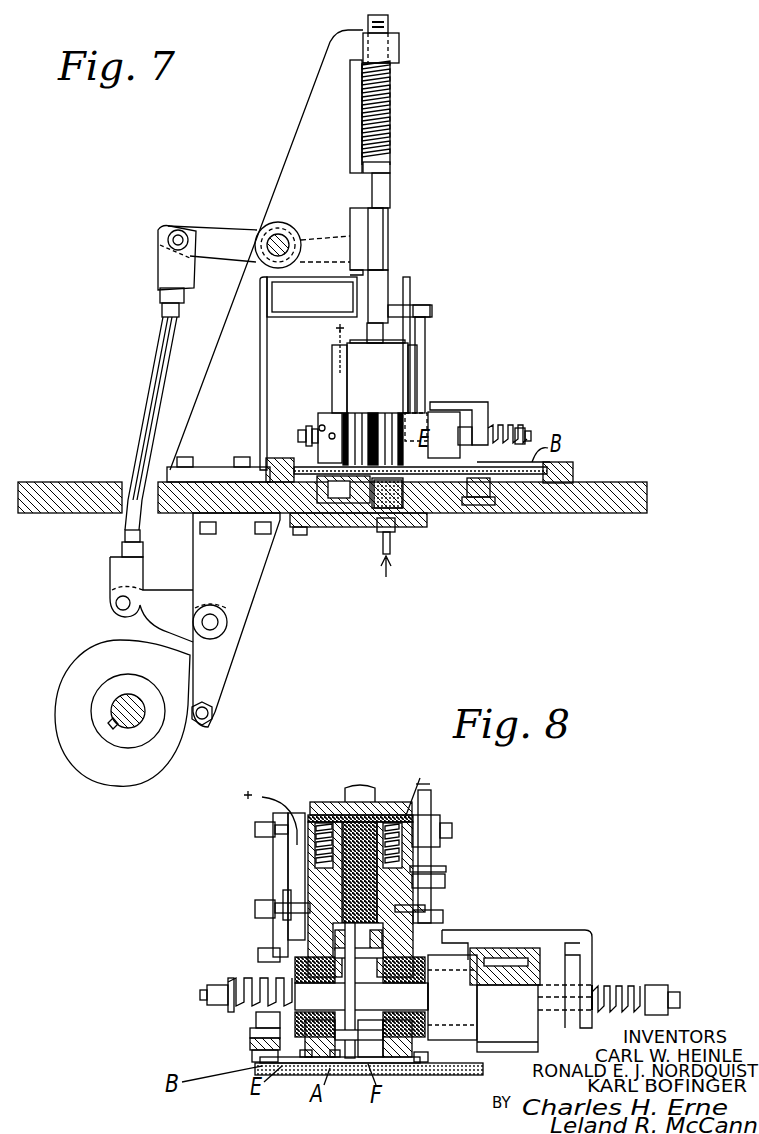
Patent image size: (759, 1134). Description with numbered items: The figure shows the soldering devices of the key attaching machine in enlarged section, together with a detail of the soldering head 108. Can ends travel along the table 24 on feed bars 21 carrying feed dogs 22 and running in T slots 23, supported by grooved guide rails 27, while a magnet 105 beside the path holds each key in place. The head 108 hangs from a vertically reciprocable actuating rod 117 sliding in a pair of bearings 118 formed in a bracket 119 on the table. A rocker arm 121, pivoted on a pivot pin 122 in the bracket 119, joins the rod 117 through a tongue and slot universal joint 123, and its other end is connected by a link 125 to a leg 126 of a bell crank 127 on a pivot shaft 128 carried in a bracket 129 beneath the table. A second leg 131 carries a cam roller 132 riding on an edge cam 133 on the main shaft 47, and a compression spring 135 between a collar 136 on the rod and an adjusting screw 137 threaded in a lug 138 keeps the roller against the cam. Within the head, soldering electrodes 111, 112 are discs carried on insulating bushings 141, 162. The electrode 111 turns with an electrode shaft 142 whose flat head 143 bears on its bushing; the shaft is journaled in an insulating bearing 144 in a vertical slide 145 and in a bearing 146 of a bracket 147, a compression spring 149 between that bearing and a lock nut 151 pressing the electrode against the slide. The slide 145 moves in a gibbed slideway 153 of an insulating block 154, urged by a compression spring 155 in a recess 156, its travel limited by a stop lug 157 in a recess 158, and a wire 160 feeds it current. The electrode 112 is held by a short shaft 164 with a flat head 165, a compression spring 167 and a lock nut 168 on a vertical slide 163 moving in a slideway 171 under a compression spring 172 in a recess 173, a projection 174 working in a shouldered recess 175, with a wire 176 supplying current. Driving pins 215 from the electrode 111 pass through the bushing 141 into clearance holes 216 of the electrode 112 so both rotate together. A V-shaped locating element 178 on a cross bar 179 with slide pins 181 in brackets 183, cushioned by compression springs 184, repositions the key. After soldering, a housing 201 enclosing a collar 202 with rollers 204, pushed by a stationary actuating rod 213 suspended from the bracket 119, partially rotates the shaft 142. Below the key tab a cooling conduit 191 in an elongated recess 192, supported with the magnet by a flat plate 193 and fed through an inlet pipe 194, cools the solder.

In FIG. 7, the adjusting screw 137 is at (392, 24).
In FIG. 7, the lug 138 is at (399, 52).
In FIG. 7, the compression spring 135 is at (391, 100).
In FIG. 7, the collar 136 is at (390, 168).
In FIG. 7, the bearings 118 is at (383, 192).
In FIG. 7, the actuating rod 117 is at (380, 228).
In FIG. 8, the actuating rod 117 is at (355, 790).
In FIG. 7, the tongue and slot universal joint 123 is at (383, 252).
In FIG. 7, the wire 160 is at (410, 283).
In FIG. 8, the wire 160 is at (430, 795).
In FIG. 7, the bracket 119 is at (312, 116).
In FIG. 7, the stationary actuating rod 213 is at (425, 345).
In FIG. 7, the rocker arm 121 is at (220, 237).
In FIG. 7, the pivot pin 122 is at (281, 242).
In FIG. 7, the link 125 is at (152, 362).
In FIG. 7, the wire 176 is at (338, 341).
In FIG. 8, the wire 176 is at (262, 798).
In FIG. 7, the soldering head 108 is at (391, 378).
In FIG. 8, the soldering head 108 is at (372, 812).
In FIG. 7, the soldering electrode 112 is at (338, 420).
In FIG. 8, the soldering electrode 112 is at (345, 1060).
In FIG. 7, the compression spring 167 is at (318, 445).
In FIG. 8, the compression spring 167 is at (246, 982).
In FIG. 7, the short shaft 164 is at (298, 434).
In FIG. 8, the short shaft 164 is at (207, 996).
In FIG. 7, the grooved guide rails 27 is at (270, 462).
In FIG. 7, the feed dogs 22 is at (303, 465).
In FIG. 7, the insulating bearing 144 is at (395, 408).
In FIG. 8, the insulating bearing 144 is at (415, 1047).
In FIG. 7, the soldering electrode 111 is at (418, 425).
In FIG. 8, the soldering electrode 111 is at (390, 1058).
In FIG. 7, the bracket 147 is at (470, 400).
In FIG. 8, the bracket 147 is at (575, 937).
In FIG. 7, the bearing 146 is at (476, 430).
In FIG. 8, the bearing 146 is at (585, 985).
In FIG. 7, the housing 201 is at (445, 446).
In FIG. 8, the housing 201 is at (520, 1045).
In FIG. 7, the compression spring 149 is at (512, 428).
In FIG. 8, the compression spring 149 is at (622, 988).
In FIG. 7, the electrode shaft 142 is at (531, 436).
In FIG. 8, the electrode shaft 142 is at (692, 998).
In FIG. 7, the feed bars 21 is at (488, 500).
In FIG. 7, the T slots 23 is at (480, 505).
In FIG. 7, the elongated recess 192 is at (402, 498).
In FIG. 7, the cooling conduit 191 is at (395, 528).
In FIG. 7, the inlet pipe 194 is at (392, 568).
In FIG. 7, the flat plate 193 is at (352, 527).
In FIG. 7, the magnet 105 is at (302, 527).
In FIG. 7, the table 24 is at (608, 508).
In FIG. 7, the bracket 129 is at (244, 573).
In FIG. 7, the leg 126 is at (158, 602).
In FIG. 7, the pivot shaft 128 is at (220, 618).
In FIG. 7, the bell crank 127 is at (228, 636).
In FIG. 7, the second leg 131 is at (210, 683).
In FIG. 7, the cam roller 132 is at (212, 722).
In FIG. 7, the edge cam 133 is at (155, 765).
In FIG. 7, the main shaft 47 is at (118, 700).
In FIG. 8, the shouldered recess 175 is at (325, 803).
In FIG. 8, the projection 174 is at (296, 805).
In FIG. 8, the recess 158 is at (380, 818).
In FIG. 8, the stop lug 157 is at (428, 783).
In FIG. 8, the compression spring 155 is at (438, 820).
In FIG. 8, the recess 156 is at (452, 834).
In FIG. 8, the insulating block 154 is at (432, 866).
In FIG. 8, the vertical gibbed slideway 153 is at (446, 883).
In FIG. 8, the compression spring 172 is at (256, 831).
In FIG. 8, the recess 173 is at (316, 850).
In FIG. 8, the vertical gibbed slideway 171 is at (340, 882).
In FIG. 8, the vertical slide 163 is at (312, 925).
In FIG. 8, the brackets 183 is at (260, 952).
In FIG. 8, the driving pins 215 is at (337, 952).
In FIG. 8, the lock nut 168 is at (226, 1004).
In FIG. 8, the slide pins 181 is at (256, 1022).
In FIG. 8, the compression springs 184 is at (250, 1034).
In FIG. 8, the cross bar 179 is at (252, 1054).
In FIG. 8, the locating element 178 is at (270, 1068).
In FIG. 8, the insulating bushing 162 is at (306, 1064).
In FIG. 8, the clearance holes 216 is at (340, 1064).
In FIG. 8, the insulating bushing 141 is at (375, 1068).
In FIG. 8, the vertical slide 145 is at (440, 928).
In FIG. 8, the rollers 204 is at (512, 950).
In FIG. 8, the collar 202 is at (532, 954).
In FIG. 8, the flat head 165 is at (361, 998).
In FIG. 8, the flat head 143 is at (395, 998).
In FIG. 8, the lock nut 151 is at (660, 990).